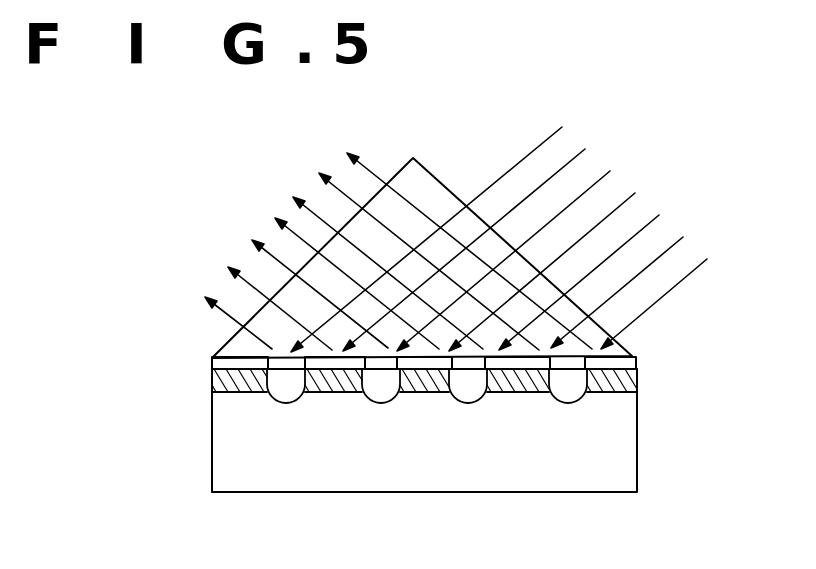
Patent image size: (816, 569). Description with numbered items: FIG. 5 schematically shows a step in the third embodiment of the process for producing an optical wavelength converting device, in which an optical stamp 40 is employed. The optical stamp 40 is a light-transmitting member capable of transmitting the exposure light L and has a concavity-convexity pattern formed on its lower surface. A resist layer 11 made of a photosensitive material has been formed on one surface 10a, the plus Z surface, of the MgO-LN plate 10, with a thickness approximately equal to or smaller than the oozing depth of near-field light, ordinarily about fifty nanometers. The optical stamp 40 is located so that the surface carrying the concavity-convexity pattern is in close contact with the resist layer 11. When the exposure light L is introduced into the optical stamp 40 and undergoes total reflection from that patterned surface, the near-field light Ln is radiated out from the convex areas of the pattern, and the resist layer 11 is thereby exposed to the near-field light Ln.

The optical stamp 40 is at (437, 193).
The exposure light L is at (690, 275).
The near-field light Ln is at (633, 359).
The one surface of the MgO-LN plate 10a is at (237, 357).
The resist layer 11 is at (638, 380).
The MgO-LN plate 10 is at (650, 430).